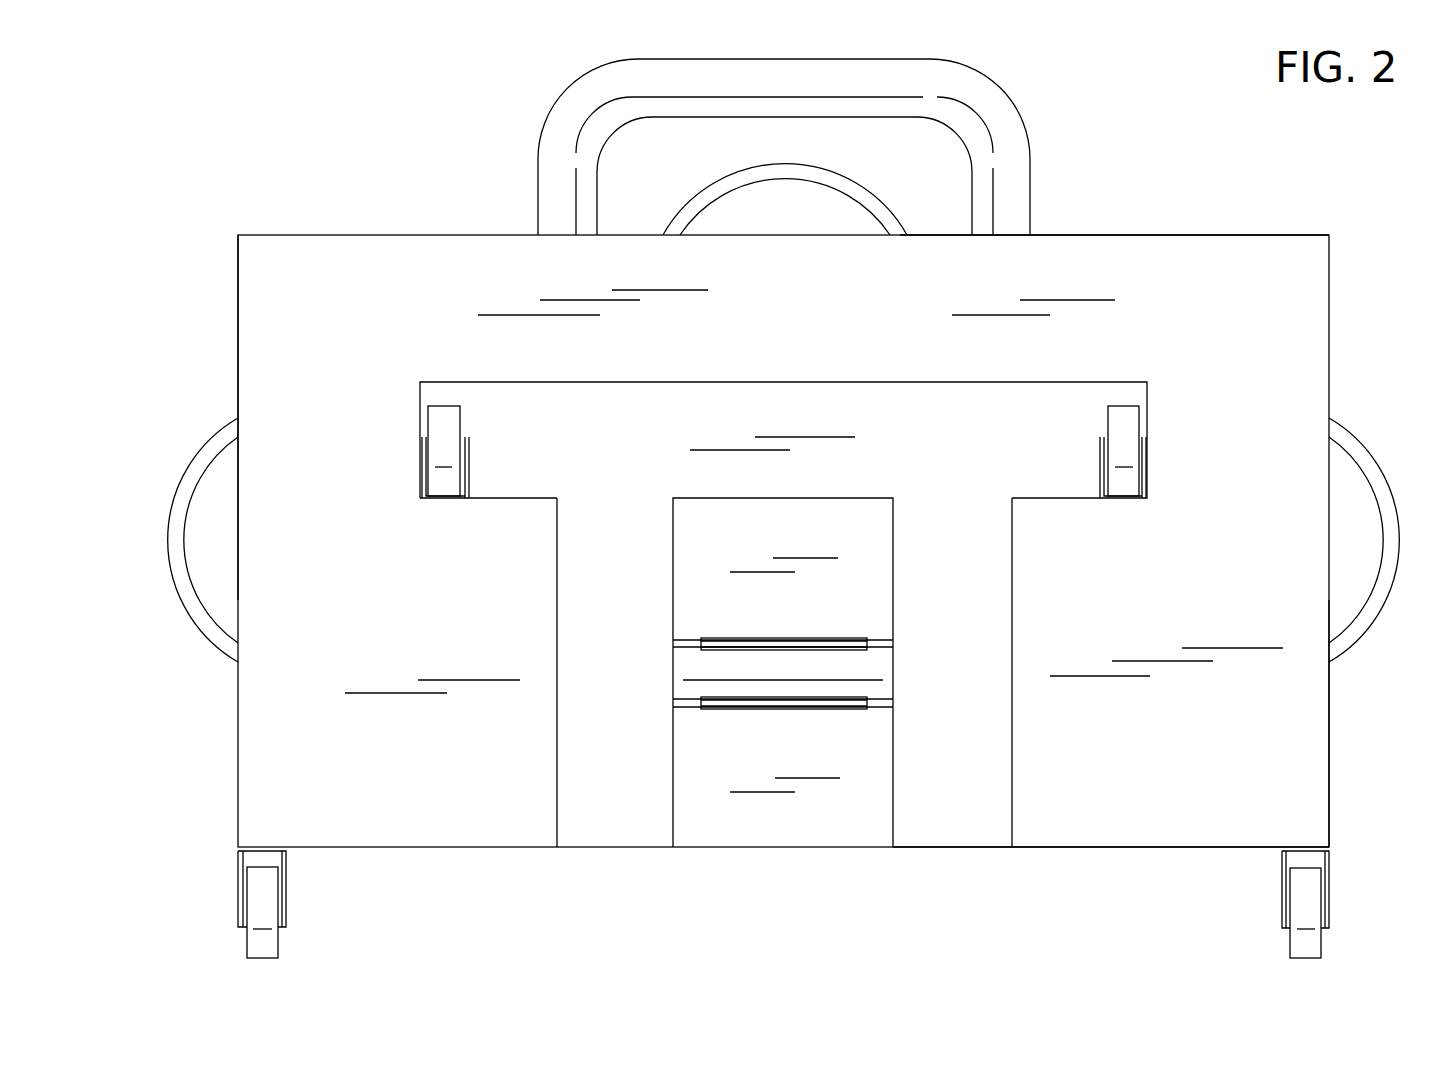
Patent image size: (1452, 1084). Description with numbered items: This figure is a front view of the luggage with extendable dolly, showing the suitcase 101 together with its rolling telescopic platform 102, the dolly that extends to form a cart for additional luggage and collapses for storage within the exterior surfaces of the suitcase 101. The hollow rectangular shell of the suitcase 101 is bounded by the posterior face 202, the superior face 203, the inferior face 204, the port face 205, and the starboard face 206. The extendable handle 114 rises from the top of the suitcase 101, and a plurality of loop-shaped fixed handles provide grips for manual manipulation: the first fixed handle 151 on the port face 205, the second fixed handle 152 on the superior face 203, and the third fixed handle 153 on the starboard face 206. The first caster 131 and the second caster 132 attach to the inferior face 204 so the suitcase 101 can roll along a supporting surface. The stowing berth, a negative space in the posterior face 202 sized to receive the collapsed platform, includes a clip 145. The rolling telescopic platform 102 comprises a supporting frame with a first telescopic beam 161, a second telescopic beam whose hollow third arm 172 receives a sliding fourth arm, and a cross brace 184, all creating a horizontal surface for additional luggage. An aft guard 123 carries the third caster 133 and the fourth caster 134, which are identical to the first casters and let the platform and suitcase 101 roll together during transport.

The suitcase 101 is at (222, 208).
The rolling telescopic platform 102 is at (960, 763).
The extendable handle 114 is at (997, 113).
The aft guard 123 is at (992, 438).
The first caster 131 is at (280, 955).
The second caster 132 is at (1320, 943).
The third caster 133 is at (442, 443).
The fourth caster 134 is at (1122, 442).
The clip 145 is at (800, 640).
The first fixed handle 151 is at (178, 492).
The second fixed handle 152 is at (773, 164).
The third fixed handle 153 is at (1372, 468).
The first telescopic beam 161 is at (567, 583).
The third arm 172 is at (985, 567).
The cross brace 184 is at (853, 670).
The posterior face 202 is at (1297, 333).
The superior face 203 is at (1193, 235).
The inferior face 204 is at (1052, 849).
The port face 205 is at (238, 340).
The starboard face 206 is at (1330, 802).